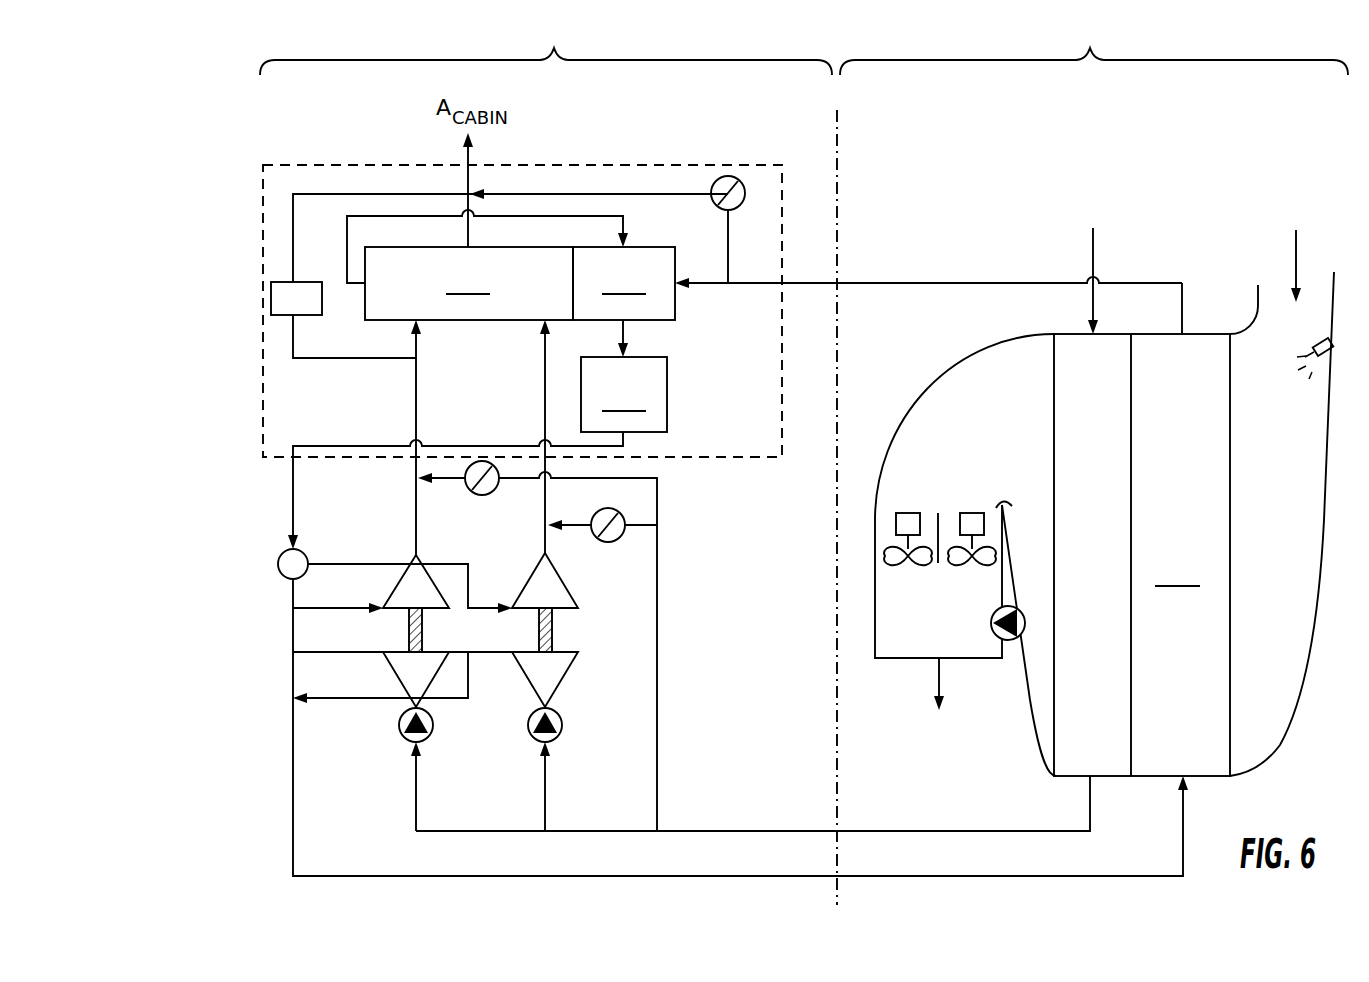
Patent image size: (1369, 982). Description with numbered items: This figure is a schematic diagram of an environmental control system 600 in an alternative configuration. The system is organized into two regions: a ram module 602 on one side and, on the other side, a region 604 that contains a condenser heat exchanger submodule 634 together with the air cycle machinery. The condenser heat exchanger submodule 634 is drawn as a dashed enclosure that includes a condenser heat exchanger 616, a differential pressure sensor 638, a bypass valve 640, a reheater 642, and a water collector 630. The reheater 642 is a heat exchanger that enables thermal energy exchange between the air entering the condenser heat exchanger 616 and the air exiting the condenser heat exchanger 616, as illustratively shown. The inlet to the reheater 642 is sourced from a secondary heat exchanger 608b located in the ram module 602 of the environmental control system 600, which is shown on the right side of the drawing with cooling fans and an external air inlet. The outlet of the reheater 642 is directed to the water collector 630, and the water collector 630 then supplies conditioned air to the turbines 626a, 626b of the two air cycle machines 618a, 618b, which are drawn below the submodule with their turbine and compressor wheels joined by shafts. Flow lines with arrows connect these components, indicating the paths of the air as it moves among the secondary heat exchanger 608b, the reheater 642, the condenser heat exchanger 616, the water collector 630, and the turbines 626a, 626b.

The environmental control system 600 is at (133, 188).
The ram module 602 is at (1094, 41).
The cabin unit side 604 is at (546, 41).
The secondary heat exchanger 608b is at (1142, 555).
The condenser heat exchanger 616 is at (469, 283).
The air cycle machine 618a is at (378, 636).
The air cycle machine 618b is at (578, 630).
The turbine 626a is at (400, 585).
The turbine 626b is at (525, 588).
The water collector 630 is at (624, 394).
The condenser heat exchanger submodule 634 is at (262, 427).
The differential pressure sensor 638 is at (271, 292).
The bypass valve 640 is at (722, 182).
The reheater 642 is at (624, 283).